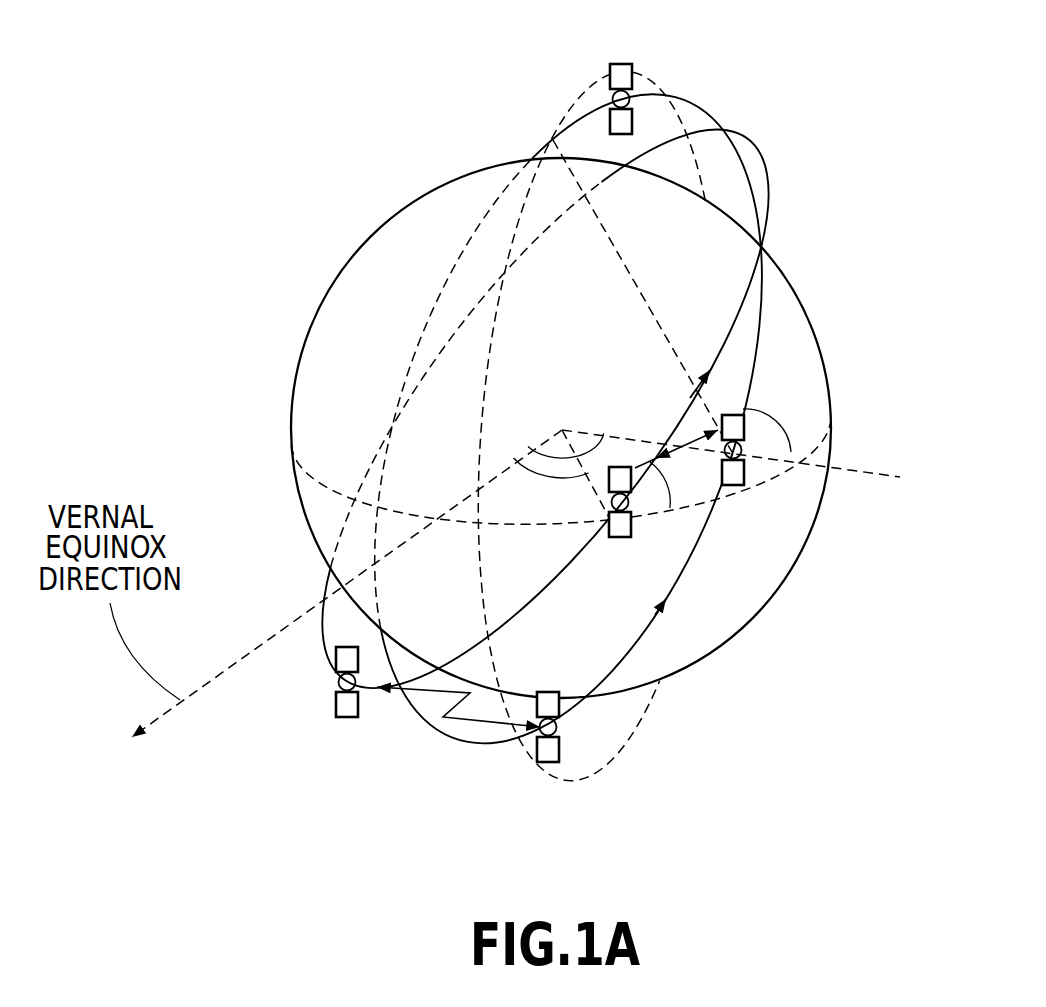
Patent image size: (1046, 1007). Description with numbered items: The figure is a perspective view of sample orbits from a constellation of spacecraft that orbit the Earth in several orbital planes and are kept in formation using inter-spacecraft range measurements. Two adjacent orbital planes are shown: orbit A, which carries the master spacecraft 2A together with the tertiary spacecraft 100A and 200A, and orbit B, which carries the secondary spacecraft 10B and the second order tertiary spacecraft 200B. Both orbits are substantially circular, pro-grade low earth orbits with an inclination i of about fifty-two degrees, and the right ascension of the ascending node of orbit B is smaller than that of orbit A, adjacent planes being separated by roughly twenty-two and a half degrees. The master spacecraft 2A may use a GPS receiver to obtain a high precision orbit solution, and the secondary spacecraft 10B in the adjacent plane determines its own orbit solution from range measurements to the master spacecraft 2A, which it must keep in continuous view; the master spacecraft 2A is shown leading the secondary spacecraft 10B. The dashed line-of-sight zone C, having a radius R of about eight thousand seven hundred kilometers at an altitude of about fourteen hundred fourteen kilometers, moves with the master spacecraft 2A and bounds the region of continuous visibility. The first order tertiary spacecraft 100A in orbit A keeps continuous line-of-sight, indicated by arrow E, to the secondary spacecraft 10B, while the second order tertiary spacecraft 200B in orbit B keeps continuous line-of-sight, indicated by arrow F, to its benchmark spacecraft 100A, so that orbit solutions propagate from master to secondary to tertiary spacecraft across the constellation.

The tertiary spacecraft 200A is at (626, 62).
The first order tertiary spacecraft 100A is at (745, 488).
The master spacecraft 2A is at (558, 733).
The secondary spacecraft 10B is at (616, 538).
The second order tertiary spacecraft 200B is at (337, 677).
The orbit A is at (693, 107).
The orbit B is at (770, 175).
The line-of-sight zone C is at (497, 310).
The radius of line-of-sight zone R is at (622, 258).
The arrow E is at (670, 443).
The arrow F is at (458, 722).
The inclination i is at (669, 488).